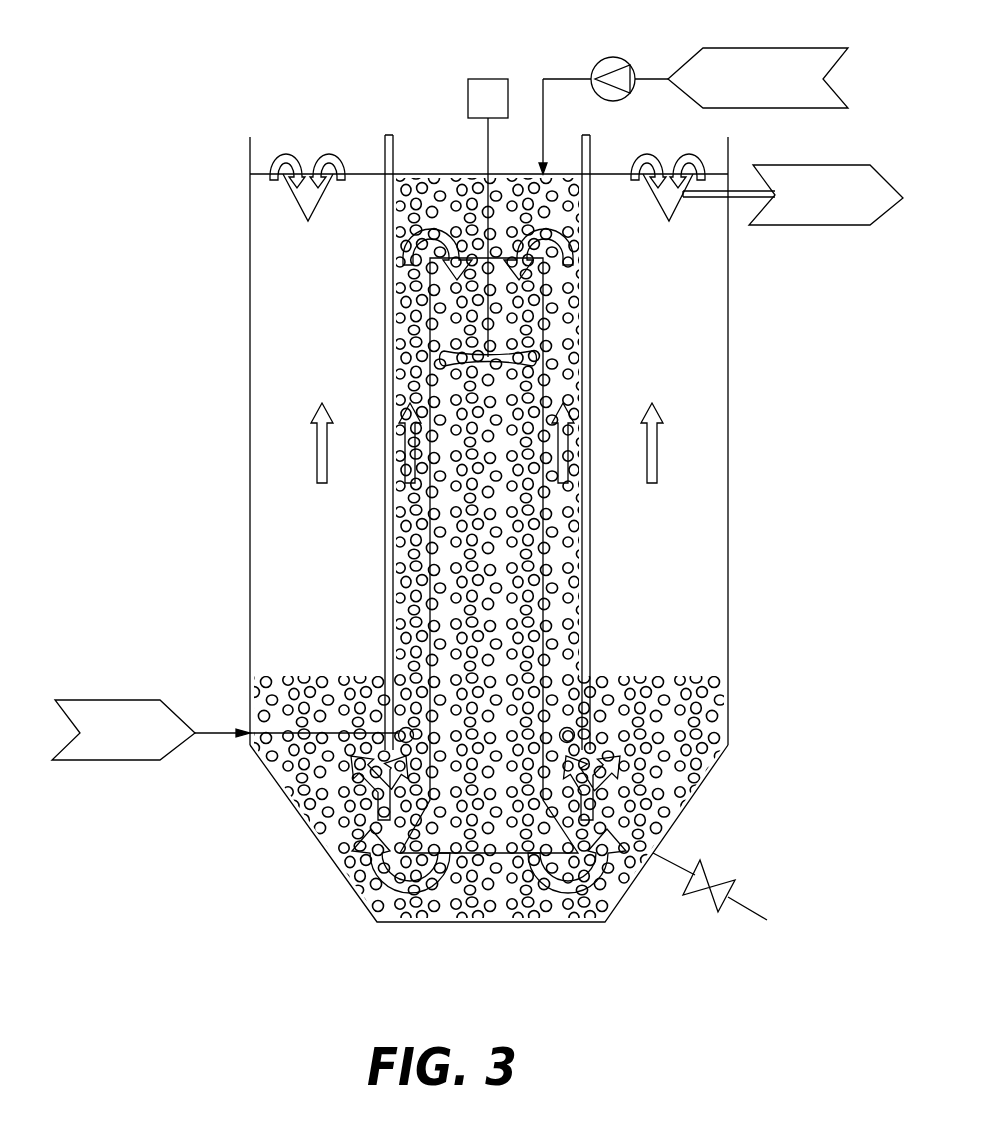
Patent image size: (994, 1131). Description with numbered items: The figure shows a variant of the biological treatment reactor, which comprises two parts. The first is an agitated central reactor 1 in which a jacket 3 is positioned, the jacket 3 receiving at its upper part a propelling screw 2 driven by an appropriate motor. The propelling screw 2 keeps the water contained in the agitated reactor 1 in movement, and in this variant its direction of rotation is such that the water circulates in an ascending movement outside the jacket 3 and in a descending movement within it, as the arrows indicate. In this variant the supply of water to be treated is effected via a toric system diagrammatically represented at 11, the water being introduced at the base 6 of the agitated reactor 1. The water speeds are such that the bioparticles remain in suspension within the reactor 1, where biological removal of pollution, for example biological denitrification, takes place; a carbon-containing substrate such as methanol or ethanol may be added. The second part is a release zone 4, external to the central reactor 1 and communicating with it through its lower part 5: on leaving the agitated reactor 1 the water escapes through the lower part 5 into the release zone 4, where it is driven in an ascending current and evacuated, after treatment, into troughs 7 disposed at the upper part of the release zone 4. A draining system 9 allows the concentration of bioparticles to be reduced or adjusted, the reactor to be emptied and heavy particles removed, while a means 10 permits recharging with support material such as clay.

The agitated central reactor 1 is at (590, 570).
The propelling screw 2 is at (526, 362).
The jacket 3 is at (546, 655).
The release zone 4 is at (705, 483).
The lower part 5 is at (410, 778).
The base 6 is at (568, 856).
The troughs 7 is at (296, 196).
The draining system 9 is at (735, 888).
The means for recharging with support material 10 is at (652, 79).
The toric system 11 is at (588, 743).